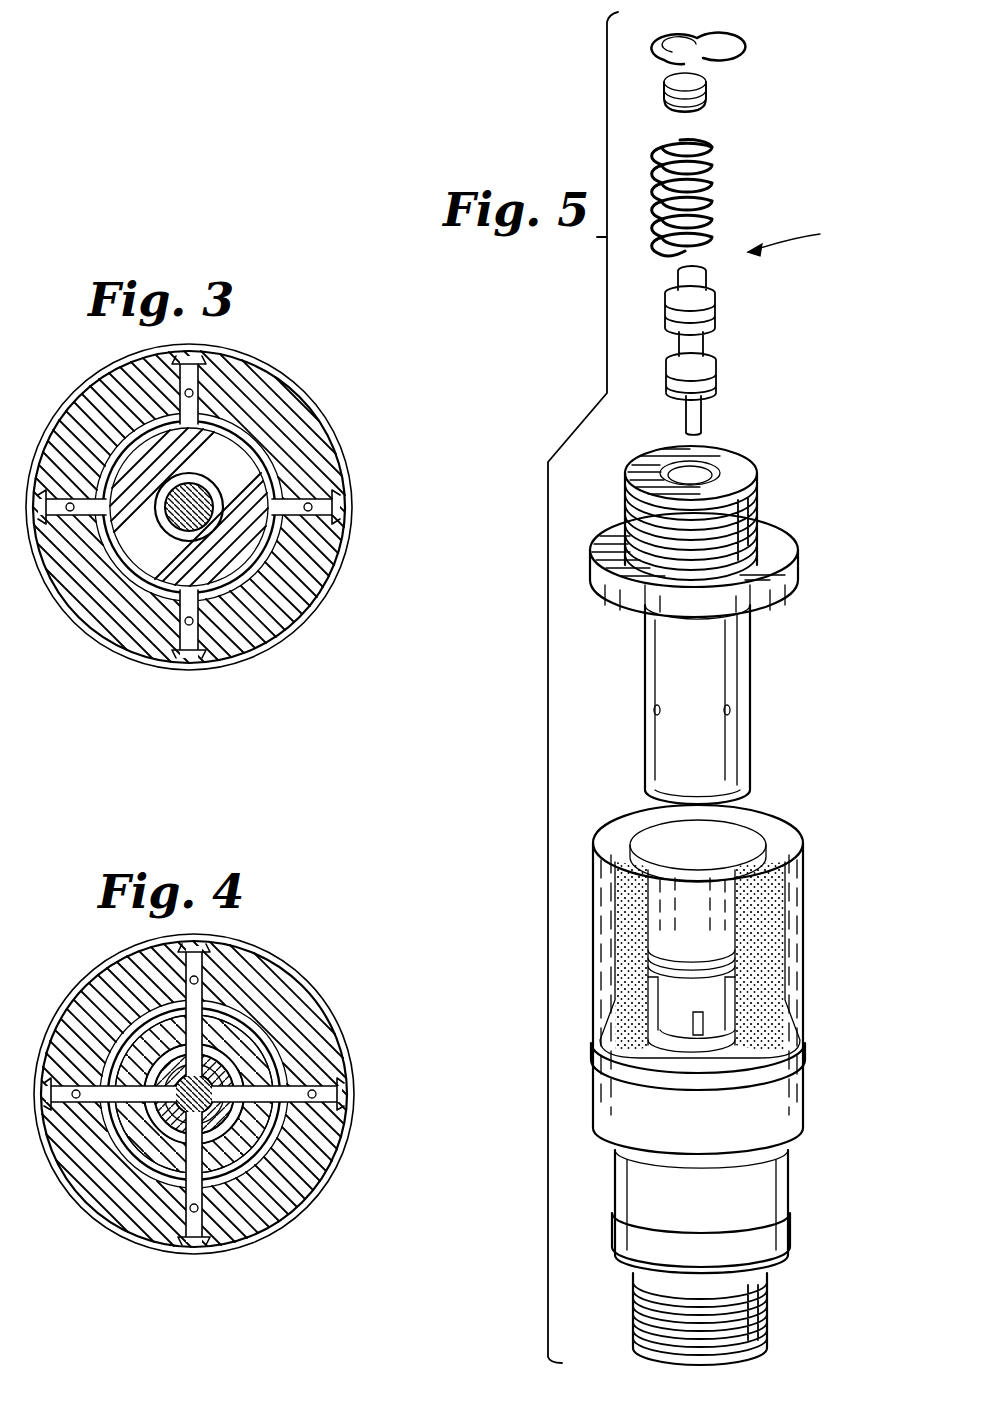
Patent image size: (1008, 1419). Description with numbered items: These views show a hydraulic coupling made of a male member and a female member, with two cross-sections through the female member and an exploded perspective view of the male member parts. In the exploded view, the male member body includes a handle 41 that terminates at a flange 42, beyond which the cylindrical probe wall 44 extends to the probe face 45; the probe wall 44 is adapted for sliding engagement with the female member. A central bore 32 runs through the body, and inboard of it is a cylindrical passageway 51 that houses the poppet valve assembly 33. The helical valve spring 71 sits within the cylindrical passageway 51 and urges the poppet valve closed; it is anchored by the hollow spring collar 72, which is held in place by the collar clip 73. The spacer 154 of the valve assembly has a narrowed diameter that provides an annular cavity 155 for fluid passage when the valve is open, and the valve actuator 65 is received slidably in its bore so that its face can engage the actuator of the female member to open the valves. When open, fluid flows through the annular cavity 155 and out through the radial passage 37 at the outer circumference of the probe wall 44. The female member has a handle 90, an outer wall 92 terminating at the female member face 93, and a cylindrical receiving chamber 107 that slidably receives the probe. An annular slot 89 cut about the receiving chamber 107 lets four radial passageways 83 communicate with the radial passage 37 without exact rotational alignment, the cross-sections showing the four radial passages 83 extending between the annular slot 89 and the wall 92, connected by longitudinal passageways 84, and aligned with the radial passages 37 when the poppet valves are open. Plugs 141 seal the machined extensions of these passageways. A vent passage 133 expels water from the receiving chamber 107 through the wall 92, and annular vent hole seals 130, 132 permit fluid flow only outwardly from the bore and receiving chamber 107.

In FIG. 5, the poppet valve assembly 33 is at (801, 237).
In FIG. 5, the collar clip 73 is at (712, 55).
In FIG. 5, the hollow spring collar 72 is at (708, 100).
In FIG. 5, the helical valve spring 71 is at (708, 178).
In FIG. 5, the spacer 154 is at (704, 340).
In FIG. 5, the valve actuator 65 is at (701, 412).
In FIG. 5, the central bore 32 is at (740, 472).
In FIG. 5, the handle 41 is at (770, 515).
In FIG. 5, the flange 42 is at (796, 590).
In FIG. 3, the cylindrical probe wall 44 is at (252, 480).
In FIG. 5, the cylindrical probe wall 44 is at (752, 676).
In FIG. 4, the radial passage 37 is at (262, 1050).
In FIG. 5, the radial passage 37 is at (732, 712).
In FIG. 5, the probe face 45 is at (736, 796).
In FIG. 5, the cylindrical receiving chamber 107 is at (700, 910).
In FIG. 5, the female member face 93 is at (778, 880).
In FIG. 5, the annular vent hole seal 132 is at (806, 1050).
In FIG. 3, the wall 92 is at (205, 430).
In FIG. 4, the wall 92 is at (228, 1020).
In FIG. 5, the wall 92 is at (790, 1200).
In FIG. 5, the annular vent hole seal 130 is at (792, 1232).
In FIG. 5, the handle 90 is at (766, 1320).
In FIG. 3, the annular slot 89 is at (215, 440).
In FIG. 4, the annular slot 89 is at (198, 1120).
In FIG. 3, the longitudinal passageway 84 is at (322, 500).
In FIG. 4, the longitudinal passageway 84 is at (340, 1090).
In FIG. 3, the plug 141 is at (340, 505).
In FIG. 4, the plug 141 is at (346, 1096).
In FIG. 3, the radial passageway 83 is at (300, 538).
In FIG. 4, the radial passageway 83 is at (312, 1118).
In FIG. 3, the annular cavity 155 is at (170, 540).
In FIG. 4, the annular cavity 155 is at (212, 1060).
In FIG. 3, the cylindrical passageway 51 is at (186, 535).
In FIG. 4, the cylindrical passageway 51 is at (180, 1125).
In FIG. 3, the vent passage 133 is at (268, 628).
In FIG. 4, the vent passage 133 is at (285, 1212).